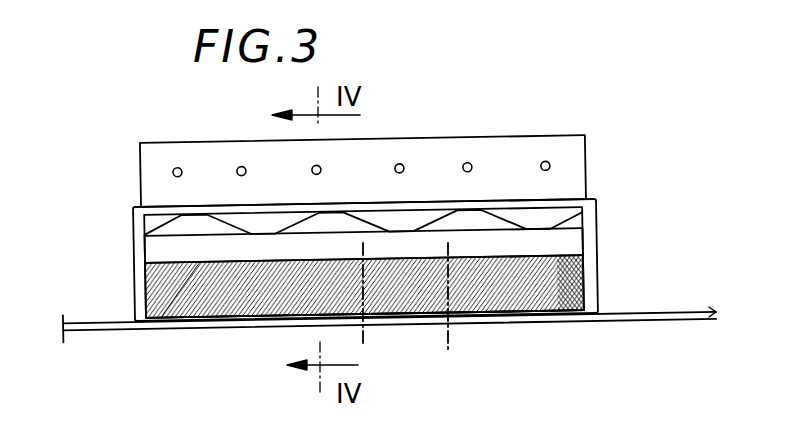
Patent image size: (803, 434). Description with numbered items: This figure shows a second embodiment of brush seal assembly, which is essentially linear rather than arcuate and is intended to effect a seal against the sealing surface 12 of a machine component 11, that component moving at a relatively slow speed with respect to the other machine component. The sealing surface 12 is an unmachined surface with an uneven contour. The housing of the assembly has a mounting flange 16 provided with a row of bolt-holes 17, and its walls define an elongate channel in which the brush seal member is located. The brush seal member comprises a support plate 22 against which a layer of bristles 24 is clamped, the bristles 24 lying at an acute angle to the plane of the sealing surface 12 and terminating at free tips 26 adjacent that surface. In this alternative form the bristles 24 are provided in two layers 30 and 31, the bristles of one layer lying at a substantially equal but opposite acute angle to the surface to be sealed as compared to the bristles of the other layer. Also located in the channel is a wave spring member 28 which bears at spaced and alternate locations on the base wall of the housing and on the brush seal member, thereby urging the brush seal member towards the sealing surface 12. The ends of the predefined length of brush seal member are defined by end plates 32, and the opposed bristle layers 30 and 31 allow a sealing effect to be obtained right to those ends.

The machine component 11 is at (630, 320).
The sealing surface 12 is at (688, 310).
The mounting flange 16 is at (502, 150).
The bolt-holes 17 is at (174, 161).
The support plate 22 is at (473, 248).
The bristles 24 is at (284, 302).
The free tips 26 is at (244, 318).
The wave spring member 28 is at (297, 222).
The bristle layer 30 is at (185, 300).
The bristle layer 31 is at (402, 305).
The end plates 32 is at (137, 248).